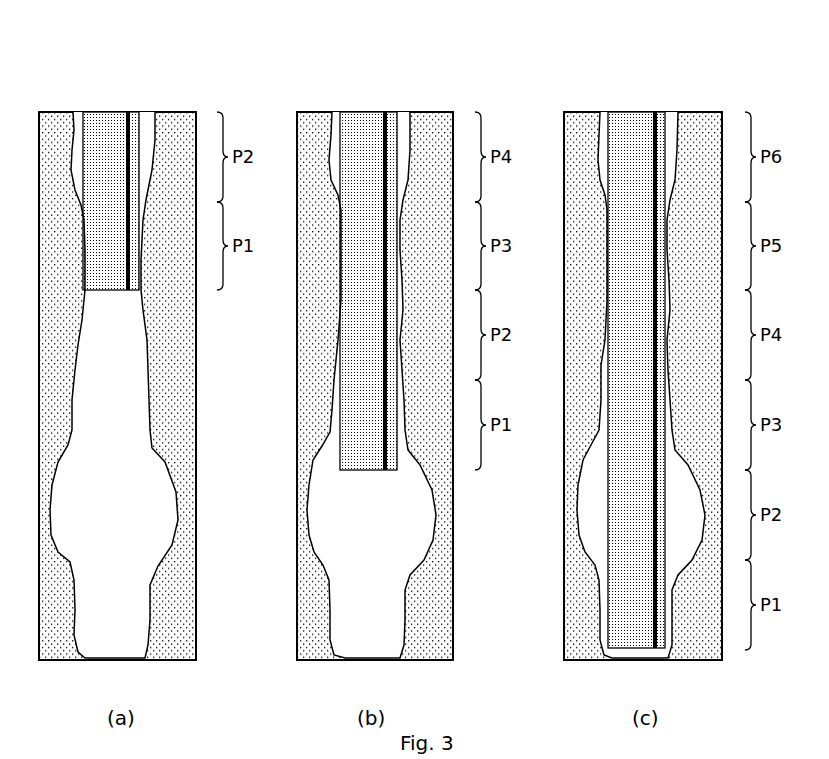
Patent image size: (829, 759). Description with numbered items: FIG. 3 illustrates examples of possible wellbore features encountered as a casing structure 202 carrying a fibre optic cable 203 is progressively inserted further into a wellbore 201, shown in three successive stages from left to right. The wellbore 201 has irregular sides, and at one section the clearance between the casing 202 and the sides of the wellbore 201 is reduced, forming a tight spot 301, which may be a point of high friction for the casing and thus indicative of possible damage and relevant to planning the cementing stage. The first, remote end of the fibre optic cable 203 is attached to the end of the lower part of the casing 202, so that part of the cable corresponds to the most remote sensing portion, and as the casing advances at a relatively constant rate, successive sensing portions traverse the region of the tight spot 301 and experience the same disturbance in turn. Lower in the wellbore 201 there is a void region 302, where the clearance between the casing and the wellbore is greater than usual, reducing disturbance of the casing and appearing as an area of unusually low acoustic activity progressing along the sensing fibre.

The wellbore 201 is at (150, 417).
The casing structure 202 is at (110, 112).
The fibre optic cable 203 is at (130, 127).
The tight spot 301 is at (158, 245).
The void region 302 is at (586, 516).